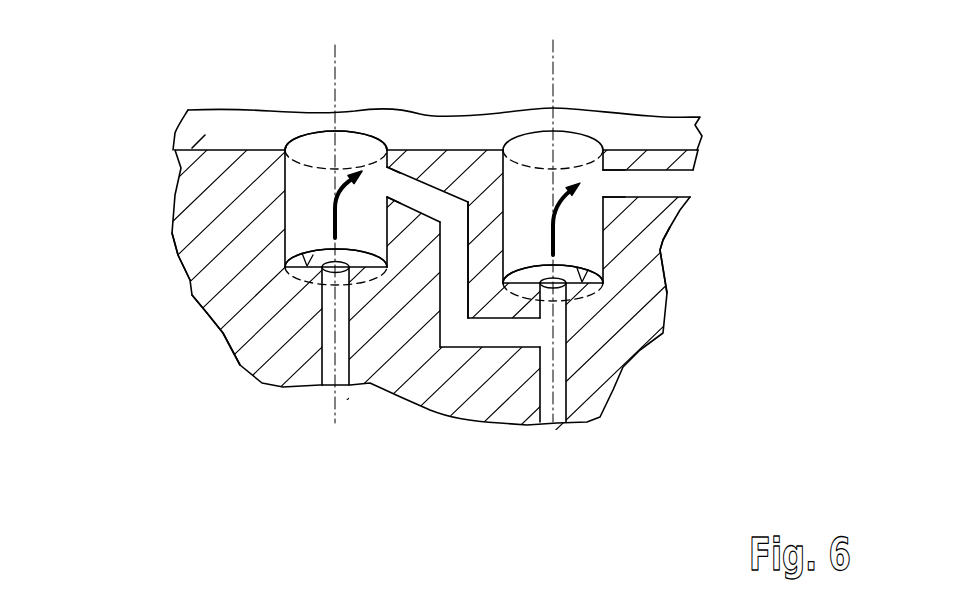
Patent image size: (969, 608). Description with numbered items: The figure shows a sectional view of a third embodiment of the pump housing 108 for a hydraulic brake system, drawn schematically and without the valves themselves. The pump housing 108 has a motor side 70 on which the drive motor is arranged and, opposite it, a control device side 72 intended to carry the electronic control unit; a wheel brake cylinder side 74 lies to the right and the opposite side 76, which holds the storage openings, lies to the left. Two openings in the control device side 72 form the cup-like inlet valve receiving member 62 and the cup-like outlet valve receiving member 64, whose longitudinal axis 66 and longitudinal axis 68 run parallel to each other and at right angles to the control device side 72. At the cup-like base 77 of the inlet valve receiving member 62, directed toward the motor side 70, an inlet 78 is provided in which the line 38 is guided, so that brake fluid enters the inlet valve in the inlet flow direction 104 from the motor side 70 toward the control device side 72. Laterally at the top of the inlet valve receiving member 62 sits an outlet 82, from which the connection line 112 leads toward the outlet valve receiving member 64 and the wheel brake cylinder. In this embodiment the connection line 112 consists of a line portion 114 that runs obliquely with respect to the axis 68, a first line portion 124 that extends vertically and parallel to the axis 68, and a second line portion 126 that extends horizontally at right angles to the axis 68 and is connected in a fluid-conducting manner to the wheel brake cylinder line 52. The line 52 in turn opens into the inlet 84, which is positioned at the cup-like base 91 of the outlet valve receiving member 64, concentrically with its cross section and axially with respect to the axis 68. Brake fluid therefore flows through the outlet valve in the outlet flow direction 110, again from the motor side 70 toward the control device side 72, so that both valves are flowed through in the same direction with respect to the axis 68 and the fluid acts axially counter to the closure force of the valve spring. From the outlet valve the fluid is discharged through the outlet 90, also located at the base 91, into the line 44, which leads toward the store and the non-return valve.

The line 38 is at (330, 338).
The line 44 is at (677, 187).
The wheel brake cylinder line 52 is at (558, 375).
The inlet valve receiving member 62 is at (310, 150).
The outlet valve receiving member 64 is at (572, 143).
The longitudinal axis 66 is at (333, 58).
The longitudinal axis 68 is at (553, 57).
The motor side 70 is at (230, 423).
The control device side 72 is at (175, 133).
The wheel brake cylinder side 74 is at (131, 249).
The side 76 is at (740, 238).
The cup-like base 77 is at (235, 337).
The inlet 78 is at (360, 287).
The outlet 82 is at (398, 163).
The inlet 84 is at (555, 283).
The outlet 90 is at (632, 168).
The cup-like base 91 is at (562, 265).
The inlet flow direction 104 is at (287, 150).
The pump housing 108 is at (195, 172).
The outlet flow direction 110 is at (558, 216).
The connection line 112 is at (441, 281).
The line portion 114 is at (432, 200).
The first line portion 124 is at (480, 210).
The second line portion 126 is at (487, 338).